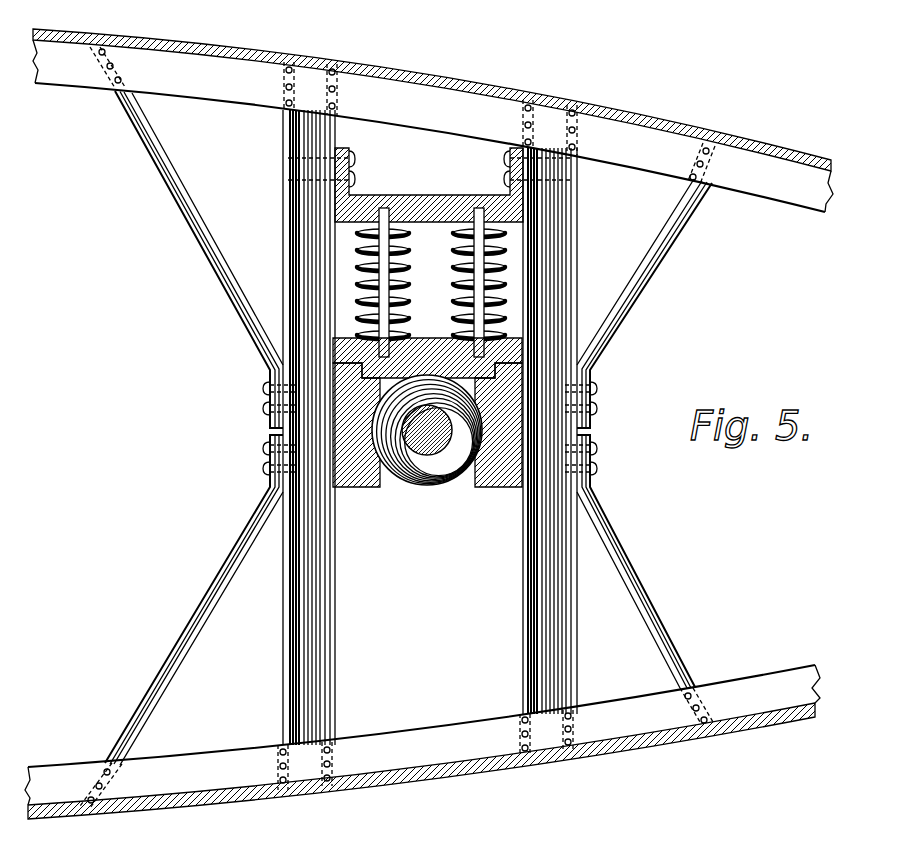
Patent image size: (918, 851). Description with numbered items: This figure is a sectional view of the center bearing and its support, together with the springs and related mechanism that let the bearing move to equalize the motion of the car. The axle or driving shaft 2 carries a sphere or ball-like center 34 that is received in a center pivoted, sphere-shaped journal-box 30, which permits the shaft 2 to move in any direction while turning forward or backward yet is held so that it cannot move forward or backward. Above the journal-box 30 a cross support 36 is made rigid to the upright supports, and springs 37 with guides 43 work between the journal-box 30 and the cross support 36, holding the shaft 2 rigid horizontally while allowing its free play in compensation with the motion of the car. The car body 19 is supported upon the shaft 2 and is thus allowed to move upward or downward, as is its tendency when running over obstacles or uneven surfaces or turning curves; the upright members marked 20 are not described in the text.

The car body 19 is at (558, 100).
The posts with braces 20 is at (283, 181).
The cross support 36 is at (415, 197).
The spring 37 is at (456, 248).
The guides 43 is at (456, 295).
The journal-box 30 is at (437, 333).
The ball-like center 34 is at (443, 488).
The shaft 2 is at (428, 445).